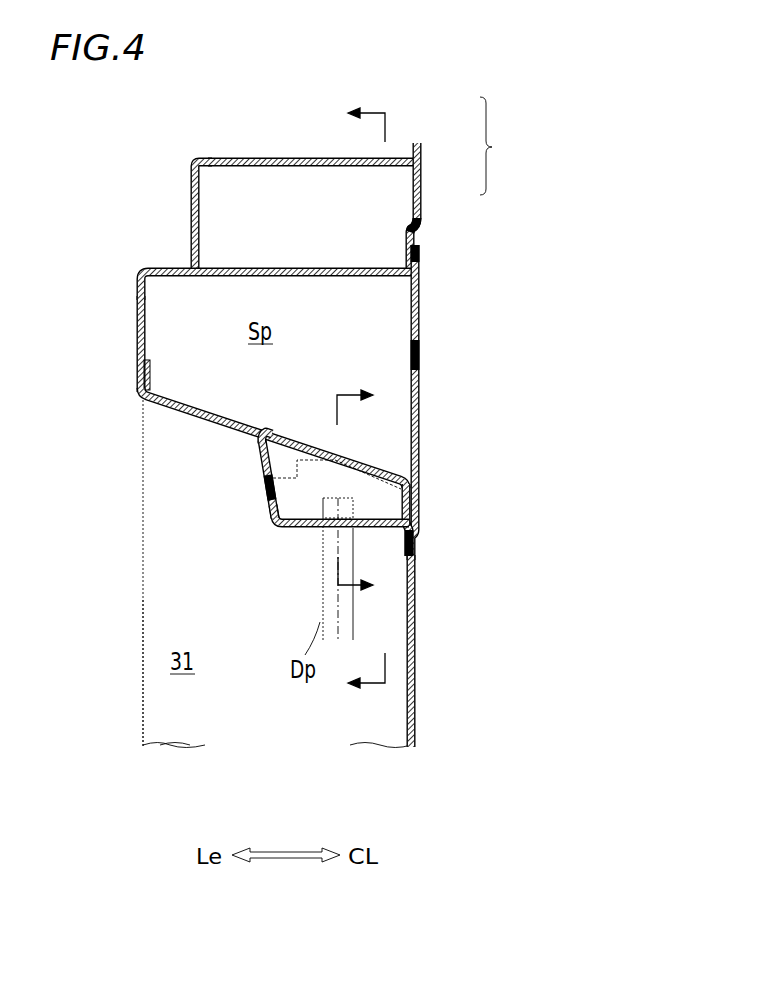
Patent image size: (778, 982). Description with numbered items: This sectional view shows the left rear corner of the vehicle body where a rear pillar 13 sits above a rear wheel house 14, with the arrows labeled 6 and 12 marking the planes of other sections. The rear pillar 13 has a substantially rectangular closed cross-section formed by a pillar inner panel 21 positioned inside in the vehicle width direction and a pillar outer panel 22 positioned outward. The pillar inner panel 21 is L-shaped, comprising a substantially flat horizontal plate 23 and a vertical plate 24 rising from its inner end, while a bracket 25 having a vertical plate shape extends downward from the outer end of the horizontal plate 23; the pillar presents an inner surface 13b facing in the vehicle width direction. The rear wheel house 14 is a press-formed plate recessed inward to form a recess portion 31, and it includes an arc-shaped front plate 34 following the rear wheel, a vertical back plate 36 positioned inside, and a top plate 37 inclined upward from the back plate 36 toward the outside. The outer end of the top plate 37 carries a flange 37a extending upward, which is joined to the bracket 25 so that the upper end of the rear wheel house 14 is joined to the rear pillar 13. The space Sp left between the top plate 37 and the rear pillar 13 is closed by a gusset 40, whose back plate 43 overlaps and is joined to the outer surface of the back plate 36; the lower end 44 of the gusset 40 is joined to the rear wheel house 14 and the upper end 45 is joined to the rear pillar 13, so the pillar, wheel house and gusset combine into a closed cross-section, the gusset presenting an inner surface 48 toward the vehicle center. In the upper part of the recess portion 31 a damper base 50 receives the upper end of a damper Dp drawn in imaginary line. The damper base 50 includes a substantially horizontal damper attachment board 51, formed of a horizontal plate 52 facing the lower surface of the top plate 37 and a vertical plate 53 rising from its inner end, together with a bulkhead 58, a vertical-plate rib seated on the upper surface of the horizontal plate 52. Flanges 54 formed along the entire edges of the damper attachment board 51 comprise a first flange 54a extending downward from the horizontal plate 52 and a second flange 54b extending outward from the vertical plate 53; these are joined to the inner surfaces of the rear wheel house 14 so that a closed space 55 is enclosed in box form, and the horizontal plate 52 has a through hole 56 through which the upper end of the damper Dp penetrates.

The section line 12 is at (373, 404).
The section line 6 is at (339, 493).
The rear pillar 13 is at (195, 158).
The inner surface of rear pillar 13b is at (421, 215).
The rear wheel house 14 is at (456, 651).
The pillar inner panel 21 is at (501, 146).
The pillar outer panel 22 is at (280, 162).
The horizontal plate 23 is at (362, 268).
The vertical plate 24 is at (421, 158).
The bracket 25 is at (138, 335).
The recess portion 31 is at (177, 696).
The front plate 34 is at (172, 709).
The back plate 36 is at (415, 668).
The top plate 37 is at (192, 418).
The flange 37a is at (150, 363).
The gusset 40 is at (477, 496).
The back plate of gusset 43 is at (418, 321).
The lower end of gusset 44 is at (416, 546).
The upper end of gusset 45 is at (418, 250).
The inner surface of gusset 48 is at (418, 355).
The damper base 50 is at (385, 493).
The damper attachment board 51 is at (286, 534).
The horizontal plate 52 is at (290, 532).
The vertical plate 53 is at (272, 503).
The flange 54 is at (286, 535).
The first flange 54a is at (405, 555).
The second flange 54b is at (250, 440).
The closed space 55 is at (262, 458).
The through hole 56 is at (307, 535).
The bulkhead 58 is at (393, 455).